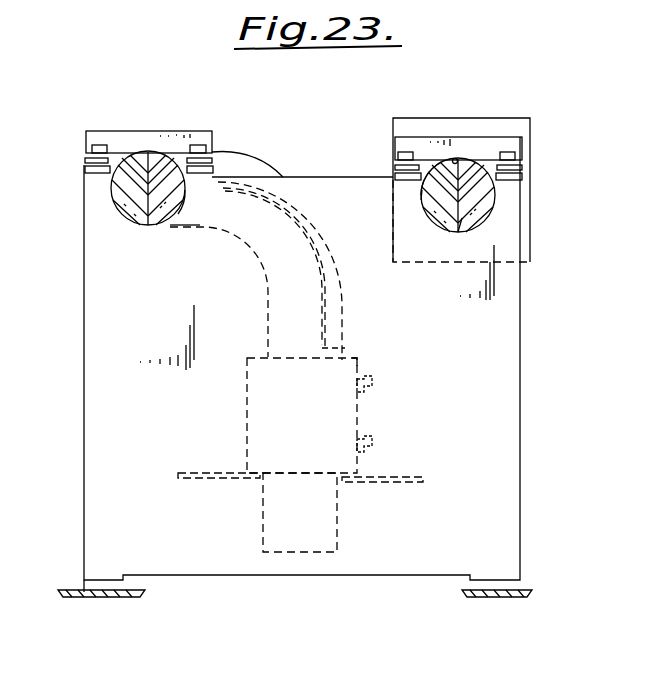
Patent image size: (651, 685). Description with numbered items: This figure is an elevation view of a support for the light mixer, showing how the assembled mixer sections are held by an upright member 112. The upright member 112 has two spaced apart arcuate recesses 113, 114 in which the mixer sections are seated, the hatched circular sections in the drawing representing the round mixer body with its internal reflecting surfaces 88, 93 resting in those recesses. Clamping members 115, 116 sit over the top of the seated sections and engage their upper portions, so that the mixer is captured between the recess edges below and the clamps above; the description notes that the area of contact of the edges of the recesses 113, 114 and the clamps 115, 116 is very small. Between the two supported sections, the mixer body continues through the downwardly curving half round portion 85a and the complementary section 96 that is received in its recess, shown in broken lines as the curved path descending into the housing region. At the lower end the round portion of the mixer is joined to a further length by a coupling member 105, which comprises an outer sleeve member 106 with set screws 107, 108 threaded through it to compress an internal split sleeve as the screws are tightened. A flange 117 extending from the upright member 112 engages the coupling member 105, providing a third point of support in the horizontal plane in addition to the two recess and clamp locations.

The downwardly curving essentially half round portion 85a is at (258, 262).
The internal reflecting surface 88 is at (457, 157).
The inner reflecting surface 93 is at (463, 212).
The section 96 is at (278, 174).
The coupling member 105 is at (246, 395).
The outer sleeve member 106 is at (359, 364).
The set screw 107 is at (375, 383).
The set screw 108 is at (375, 443).
The upright member 112 is at (100, 457).
The arcuate recess 113 is at (423, 205).
The arcuate recess 114 is at (177, 226).
The clamping member 115 is at (515, 147).
The clamping member 116 is at (100, 137).
The flange 117 is at (233, 480).